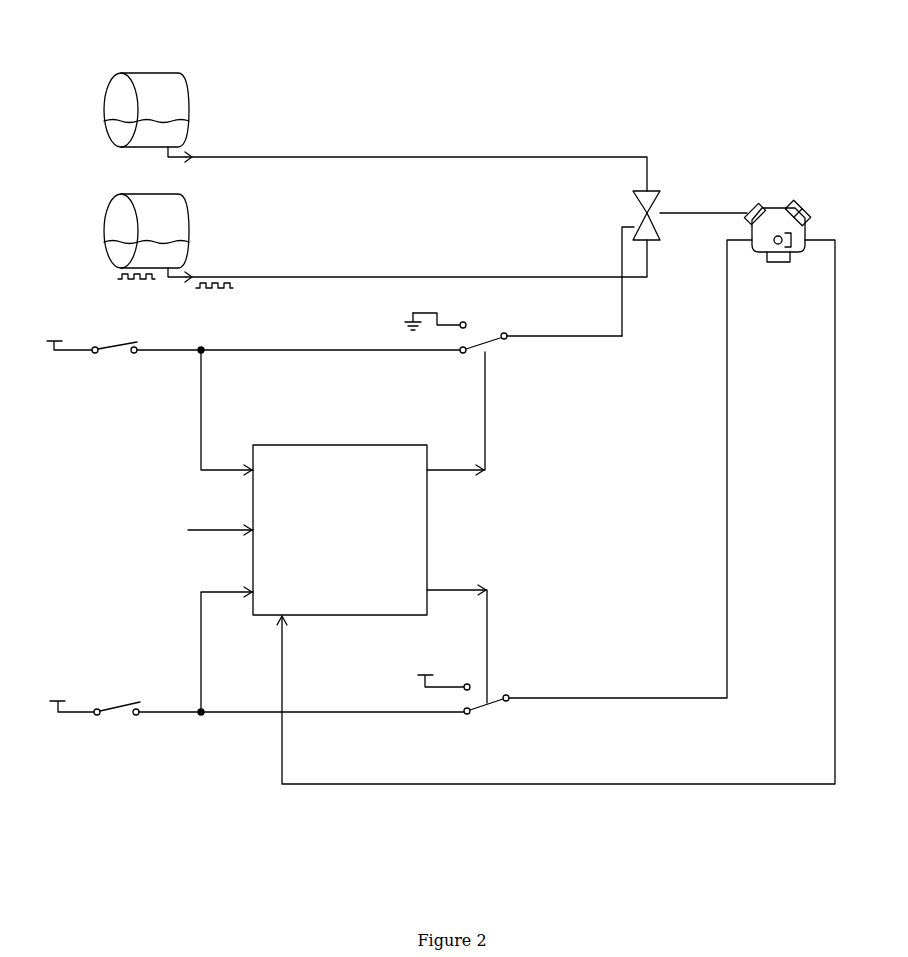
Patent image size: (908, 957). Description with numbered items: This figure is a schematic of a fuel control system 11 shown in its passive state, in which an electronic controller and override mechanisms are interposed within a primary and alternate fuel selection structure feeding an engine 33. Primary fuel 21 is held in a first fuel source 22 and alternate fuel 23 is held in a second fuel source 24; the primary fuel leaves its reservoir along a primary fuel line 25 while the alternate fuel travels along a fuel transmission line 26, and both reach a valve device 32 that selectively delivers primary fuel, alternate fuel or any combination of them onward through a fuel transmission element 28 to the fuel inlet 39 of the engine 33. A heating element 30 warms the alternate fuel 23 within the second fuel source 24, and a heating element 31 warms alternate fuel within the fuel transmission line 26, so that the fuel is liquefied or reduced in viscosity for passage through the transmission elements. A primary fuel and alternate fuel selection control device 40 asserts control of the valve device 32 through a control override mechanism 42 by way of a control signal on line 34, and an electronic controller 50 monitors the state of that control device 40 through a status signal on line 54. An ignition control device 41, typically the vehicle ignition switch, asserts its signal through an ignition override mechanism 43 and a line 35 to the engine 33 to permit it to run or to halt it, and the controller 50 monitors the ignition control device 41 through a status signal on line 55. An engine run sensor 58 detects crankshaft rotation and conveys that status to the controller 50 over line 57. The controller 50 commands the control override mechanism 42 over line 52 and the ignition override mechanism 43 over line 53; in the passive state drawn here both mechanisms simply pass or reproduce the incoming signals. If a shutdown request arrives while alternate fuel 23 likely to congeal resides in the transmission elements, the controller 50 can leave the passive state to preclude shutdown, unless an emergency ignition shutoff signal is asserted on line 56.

The fuel control system 11 is at (448, 40).
The primary fuel 21 is at (110, 133).
The first fuel source 22 is at (104, 95).
The alternate fuel 23 is at (110, 250).
The second fuel source 24 is at (189, 214).
The primary fuel line 25 is at (271, 152).
The fuel transmission line 26 is at (271, 273).
The fuel transmission element 28 is at (719, 217).
The heating element 30 is at (137, 284).
The heating element 31 is at (213, 293).
The valve device 32 is at (636, 192).
The engine 33 is at (803, 207).
The line 34 is at (622, 313).
The line 35 is at (730, 312).
The fuel inlet 39 is at (750, 211).
The primary fuel and alternate fuel selection control device 40 is at (113, 342).
The ignition control device 41 is at (115, 702).
The control override mechanism 42 is at (506, 354).
The ignition override mechanism 43 is at (507, 706).
The electronic controller 50 is at (341, 448).
The line 52 is at (483, 413).
The line 53 is at (490, 635).
The line 54 is at (198, 438).
The line 55 is at (198, 637).
The line 56 is at (227, 538).
The line 57 is at (832, 325).
The engine run sensor 58 is at (793, 246).